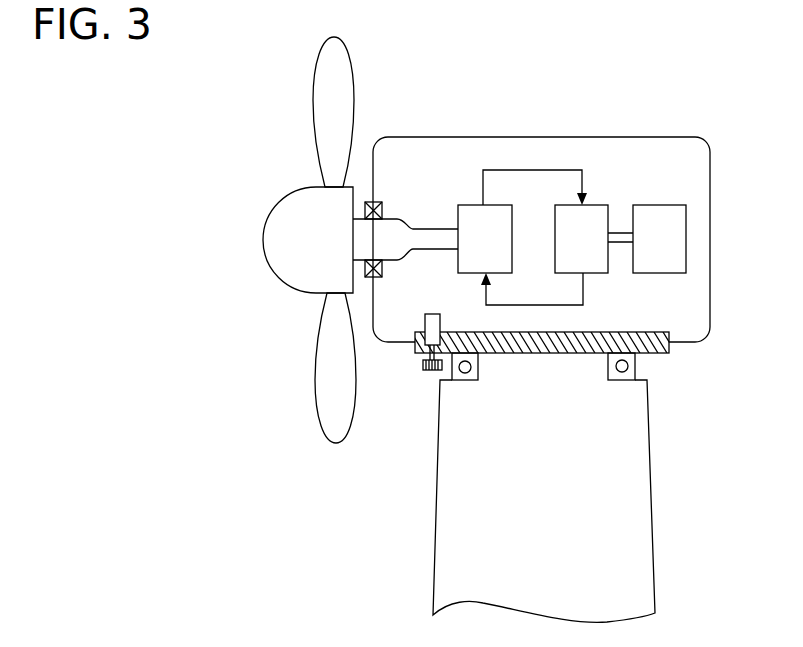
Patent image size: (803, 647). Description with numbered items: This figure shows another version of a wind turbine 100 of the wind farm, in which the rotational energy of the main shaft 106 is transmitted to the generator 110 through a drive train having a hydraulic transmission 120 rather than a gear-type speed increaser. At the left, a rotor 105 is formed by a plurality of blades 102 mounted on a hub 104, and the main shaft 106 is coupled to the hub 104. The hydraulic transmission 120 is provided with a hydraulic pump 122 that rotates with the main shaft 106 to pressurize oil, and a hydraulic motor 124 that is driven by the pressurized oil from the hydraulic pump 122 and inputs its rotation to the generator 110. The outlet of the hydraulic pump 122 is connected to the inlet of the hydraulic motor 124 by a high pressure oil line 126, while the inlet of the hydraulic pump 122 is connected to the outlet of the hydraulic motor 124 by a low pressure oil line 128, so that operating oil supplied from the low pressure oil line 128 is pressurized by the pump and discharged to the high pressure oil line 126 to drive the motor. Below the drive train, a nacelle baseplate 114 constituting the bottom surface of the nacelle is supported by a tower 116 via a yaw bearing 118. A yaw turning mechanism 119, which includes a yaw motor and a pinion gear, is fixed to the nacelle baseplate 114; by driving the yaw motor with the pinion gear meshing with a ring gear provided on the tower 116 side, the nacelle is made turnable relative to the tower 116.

The wind turbine 100 is at (772, 77).
The blade 102 is at (313, 77).
The hub 104 is at (283, 202).
The rotor 105 is at (220, 133).
The main shaft 106 is at (438, 228).
The generator 110 is at (657, 203).
The nacelle baseplate 114 is at (512, 353).
The tower 116 is at (649, 473).
The yaw bearing 118 is at (637, 367).
The yaw turning mechanism 119 is at (425, 321).
The hydraulic transmission 120 is at (438, 261).
The hydraulic pump 122 is at (472, 205).
The hydraulic motor 124 is at (595, 203).
The high pressure oil line 126 is at (523, 170).
The low pressure oil line 128 is at (545, 307).